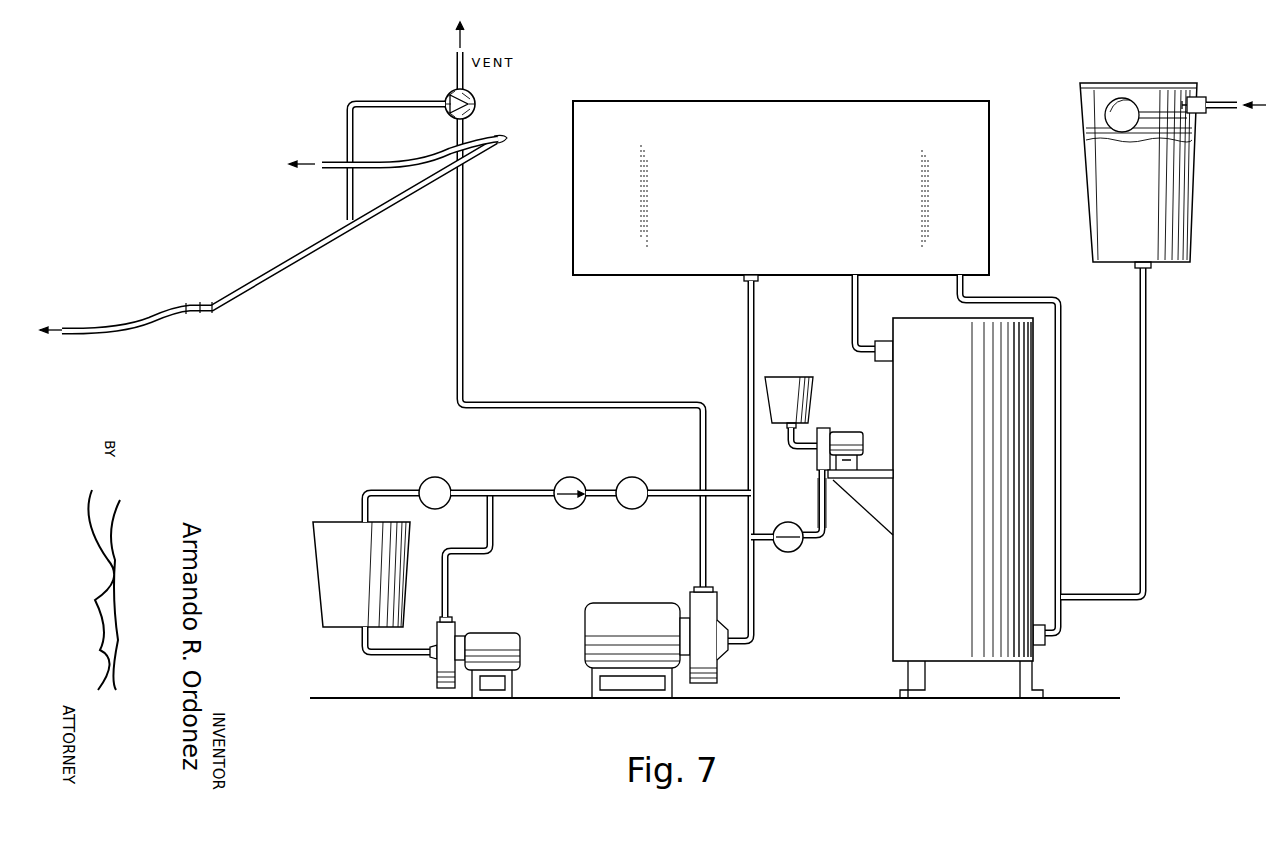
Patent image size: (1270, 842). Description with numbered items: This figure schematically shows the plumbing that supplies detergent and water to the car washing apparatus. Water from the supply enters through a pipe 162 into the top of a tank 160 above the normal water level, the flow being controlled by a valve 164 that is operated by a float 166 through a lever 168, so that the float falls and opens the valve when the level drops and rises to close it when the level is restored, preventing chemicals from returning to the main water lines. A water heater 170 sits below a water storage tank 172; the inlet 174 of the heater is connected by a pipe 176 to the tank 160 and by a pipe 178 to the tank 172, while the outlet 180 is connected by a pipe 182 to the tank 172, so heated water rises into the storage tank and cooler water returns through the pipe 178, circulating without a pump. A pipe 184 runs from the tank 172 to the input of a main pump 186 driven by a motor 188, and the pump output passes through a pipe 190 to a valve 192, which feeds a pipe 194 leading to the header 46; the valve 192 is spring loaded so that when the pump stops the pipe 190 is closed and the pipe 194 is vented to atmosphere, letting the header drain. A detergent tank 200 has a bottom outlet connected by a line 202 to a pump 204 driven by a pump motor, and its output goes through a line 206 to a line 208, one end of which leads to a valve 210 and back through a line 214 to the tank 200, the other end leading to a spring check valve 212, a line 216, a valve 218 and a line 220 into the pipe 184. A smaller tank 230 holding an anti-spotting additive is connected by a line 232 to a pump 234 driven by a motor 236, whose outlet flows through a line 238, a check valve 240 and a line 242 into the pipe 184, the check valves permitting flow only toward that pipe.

The supply header 46 is at (280, 272).
The tank 160 is at (1085, 166).
The pipe 162 is at (1228, 100).
The valve 164 is at (1198, 97).
The float 166 is at (1105, 113).
The lever 168 is at (1155, 112).
The water heater 170 is at (893, 655).
The water storage tank 172 is at (572, 101).
The inlet 174 is at (1044, 646).
The pipe 176 is at (1142, 546).
The pipe 178 is at (1062, 547).
The outlet 180 is at (877, 362).
The pipe 182 is at (858, 305).
The pipe 184 is at (755, 305).
The main pump 186 is at (718, 665).
The motor 188 is at (585, 610).
The pipe 190 is at (582, 386).
The valve 192 is at (475, 106).
The pipe 194 is at (400, 103).
The detergent tank 200 is at (332, 627).
The line 202 is at (372, 655).
The pump 204 is at (436, 640).
The pump motor / line 206 is at (444, 594).
The line 208 is at (511, 490).
The valve 210 is at (444, 485).
The spring check valve 212 is at (566, 478).
The line 214 is at (386, 492).
The line 216 is at (613, 472).
The valve 218 is at (653, 473).
The line 220 is at (679, 490).
The smaller tank 230 is at (814, 402).
The line 232 is at (787, 440).
The pump 234 is at (818, 462).
The motor 236 is at (866, 448).
The line 238 is at (822, 520).
The check valve 240 is at (805, 508).
The line 242 is at (764, 542).